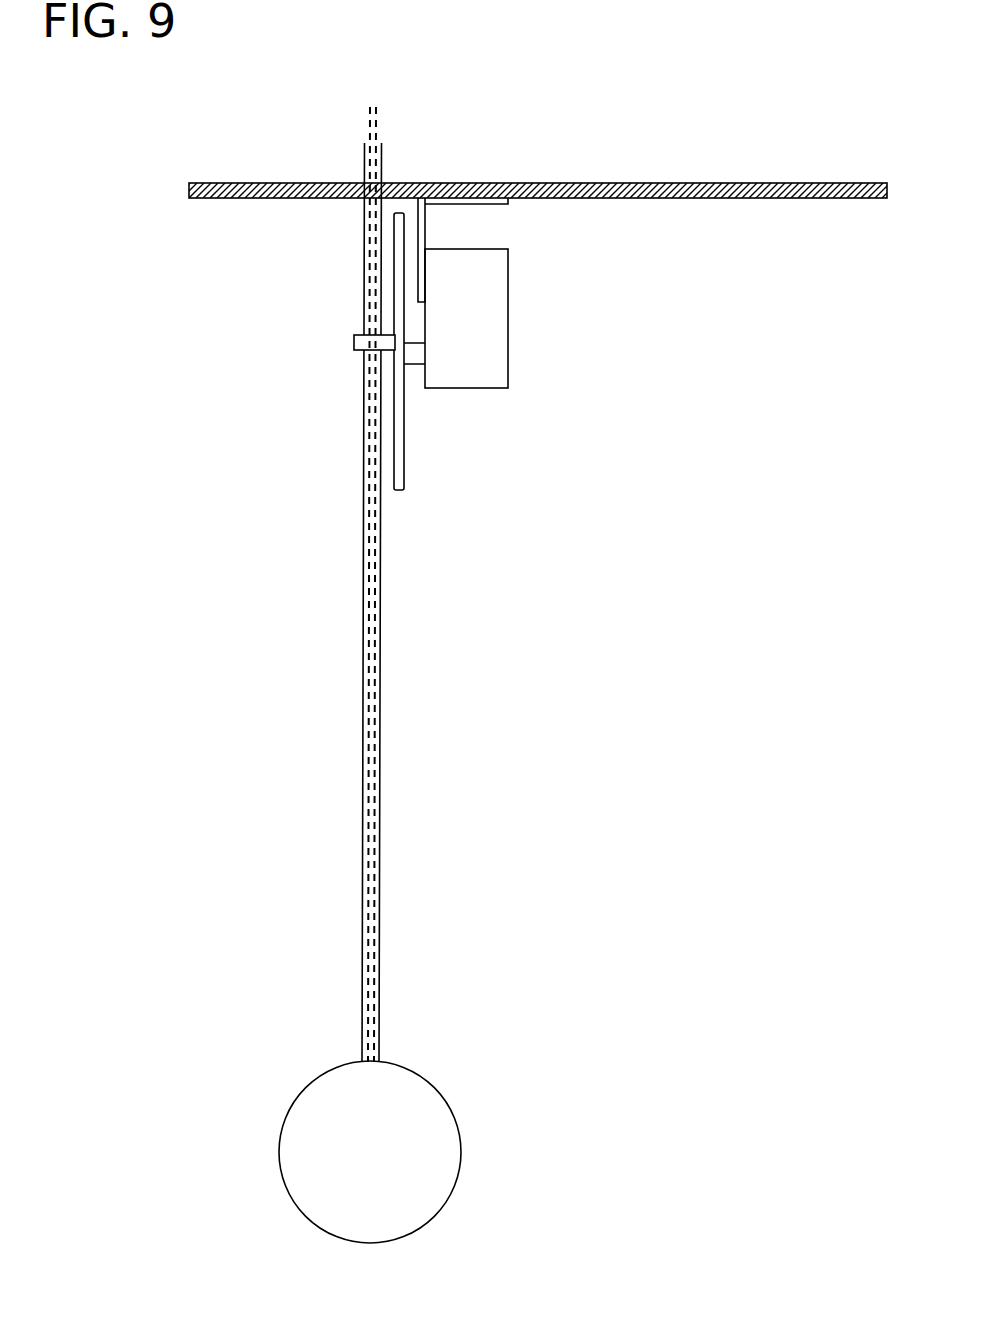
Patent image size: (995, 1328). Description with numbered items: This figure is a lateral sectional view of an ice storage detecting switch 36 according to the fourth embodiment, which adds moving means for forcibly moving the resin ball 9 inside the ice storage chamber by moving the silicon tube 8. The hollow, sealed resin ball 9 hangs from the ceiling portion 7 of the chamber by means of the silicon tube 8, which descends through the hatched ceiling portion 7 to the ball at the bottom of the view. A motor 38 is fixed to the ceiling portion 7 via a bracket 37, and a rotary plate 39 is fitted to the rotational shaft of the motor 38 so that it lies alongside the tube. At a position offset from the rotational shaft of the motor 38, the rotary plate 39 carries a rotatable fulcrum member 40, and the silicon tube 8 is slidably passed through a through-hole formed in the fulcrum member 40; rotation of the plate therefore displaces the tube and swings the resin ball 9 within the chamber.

The ceiling portion 7 is at (262, 198).
The silicon tube 8 is at (363, 625).
The resin ball 9 is at (443, 1095).
The ice storage detecting switch 36 is at (406, 355).
The bracket 37 is at (500, 204).
The motor 38 is at (508, 352).
The rotary plate 39 is at (403, 455).
The fulcrum member 40 is at (355, 348).